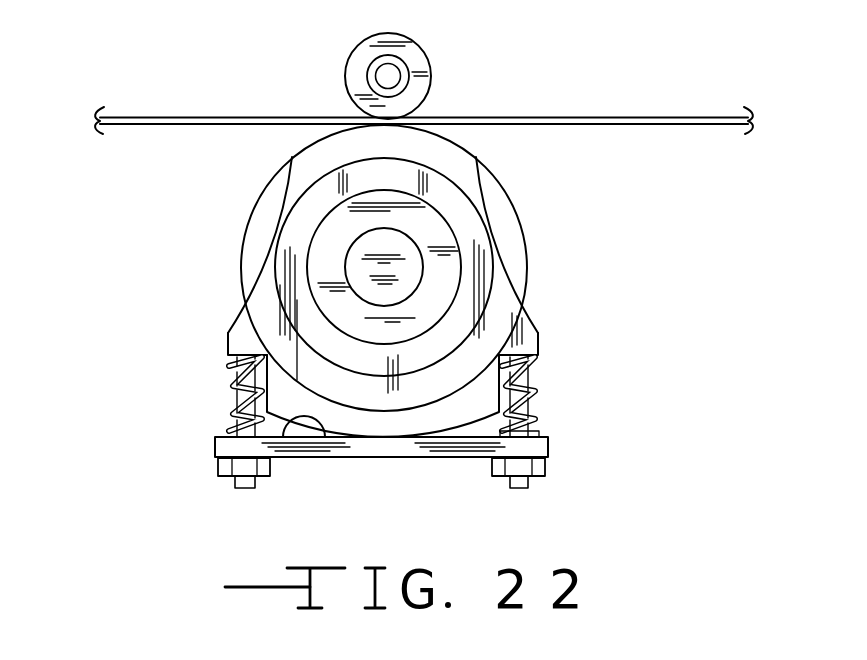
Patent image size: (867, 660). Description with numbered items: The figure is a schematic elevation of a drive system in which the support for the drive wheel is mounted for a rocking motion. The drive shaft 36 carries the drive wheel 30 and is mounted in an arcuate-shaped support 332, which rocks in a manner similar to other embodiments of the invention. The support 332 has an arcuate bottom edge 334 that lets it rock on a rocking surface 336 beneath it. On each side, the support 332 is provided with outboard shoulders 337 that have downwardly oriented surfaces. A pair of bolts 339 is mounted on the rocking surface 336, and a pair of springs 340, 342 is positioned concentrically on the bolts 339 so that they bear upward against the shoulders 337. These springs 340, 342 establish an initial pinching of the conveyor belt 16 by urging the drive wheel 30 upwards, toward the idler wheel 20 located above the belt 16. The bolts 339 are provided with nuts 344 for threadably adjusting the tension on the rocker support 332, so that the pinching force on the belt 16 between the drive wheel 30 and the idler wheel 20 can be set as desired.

The conveyor belt 16 is at (607, 117).
The idler wheel 20 is at (430, 63).
The drive wheel 30 is at (503, 181).
The drive shaft 36 is at (422, 243).
The arcuate-shaped support 332 is at (246, 206).
The arcuate bottom edge 334 is at (468, 443).
The rocking surface 336 is at (322, 426).
The outboard shoulders 337 is at (538, 343).
The bolts 339 is at (232, 419).
The spring 340 is at (229, 403).
The spring 342 is at (538, 428).
The nuts 344 is at (220, 466).